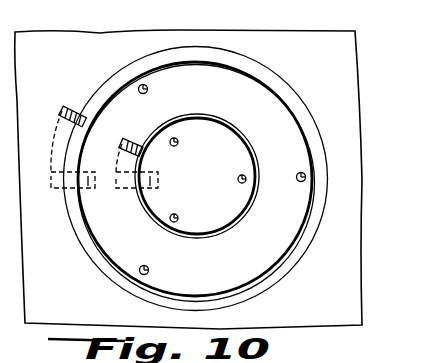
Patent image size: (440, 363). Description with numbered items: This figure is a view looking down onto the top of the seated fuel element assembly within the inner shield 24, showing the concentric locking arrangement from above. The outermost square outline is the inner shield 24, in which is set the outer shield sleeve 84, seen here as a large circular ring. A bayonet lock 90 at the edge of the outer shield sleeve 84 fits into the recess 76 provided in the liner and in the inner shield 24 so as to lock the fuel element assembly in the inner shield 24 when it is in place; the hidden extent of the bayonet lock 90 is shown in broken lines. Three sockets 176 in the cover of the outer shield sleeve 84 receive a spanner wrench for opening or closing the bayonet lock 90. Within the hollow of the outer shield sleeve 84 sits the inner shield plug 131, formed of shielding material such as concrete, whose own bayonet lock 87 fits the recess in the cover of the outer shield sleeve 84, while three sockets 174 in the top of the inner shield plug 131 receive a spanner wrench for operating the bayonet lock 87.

The inner shield 24 is at (303, 24).
The recess 76 is at (80, 110).
The outer shield sleeve 84 is at (249, 260).
The bayonet lock 87 is at (150, 187).
The bayonet lock 90 is at (92, 190).
The inner shield plug 131 is at (210, 178).
The sockets 174 is at (238, 178).
The sockets 176 is at (148, 88).